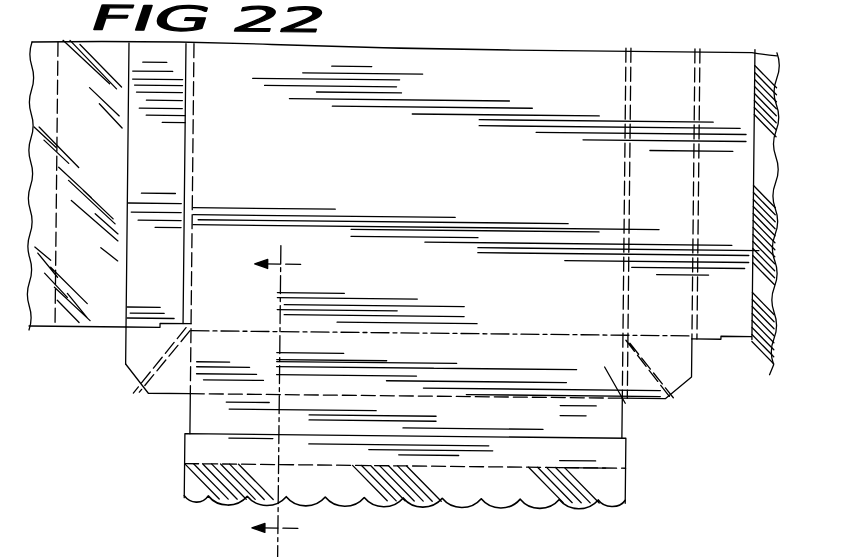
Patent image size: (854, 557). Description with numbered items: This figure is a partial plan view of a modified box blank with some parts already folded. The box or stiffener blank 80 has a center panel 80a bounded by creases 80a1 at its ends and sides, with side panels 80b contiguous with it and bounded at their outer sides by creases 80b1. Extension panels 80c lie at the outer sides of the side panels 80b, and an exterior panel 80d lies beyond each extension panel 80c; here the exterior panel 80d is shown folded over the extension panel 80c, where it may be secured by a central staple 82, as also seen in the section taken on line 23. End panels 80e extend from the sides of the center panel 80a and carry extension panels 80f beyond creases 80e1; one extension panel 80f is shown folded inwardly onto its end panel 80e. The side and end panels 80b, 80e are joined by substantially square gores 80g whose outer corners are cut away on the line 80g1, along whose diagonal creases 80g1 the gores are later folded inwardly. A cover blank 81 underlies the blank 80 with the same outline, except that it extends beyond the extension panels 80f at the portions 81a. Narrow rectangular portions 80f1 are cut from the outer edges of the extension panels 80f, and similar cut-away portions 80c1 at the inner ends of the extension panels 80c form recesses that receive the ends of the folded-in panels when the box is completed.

The box or stiffener blank 80 is at (492, 52).
The center panel 80a is at (482, 164).
The creases 80a1 is at (196, 204).
The side panels 80b is at (550, 350).
The creases 80b1 is at (349, 395).
The extension panels 80c is at (191, 426).
The cut away portions 80c1 is at (189, 400).
The exterior panel 80d is at (629, 461).
The end panels 80e is at (190, 116).
The creases 80e1 is at (129, 242).
The extension panels 80f is at (170, 154).
The cut away portions 80f1 is at (171, 319).
The gores 80g is at (156, 383).
The line or crease 80g1 is at (146, 364).
The cover blank 81 is at (771, 362).
The portions 81a is at (38, 306).
The central staple 82 is at (455, 449).
The section line 23- 23 is at (325, 401).